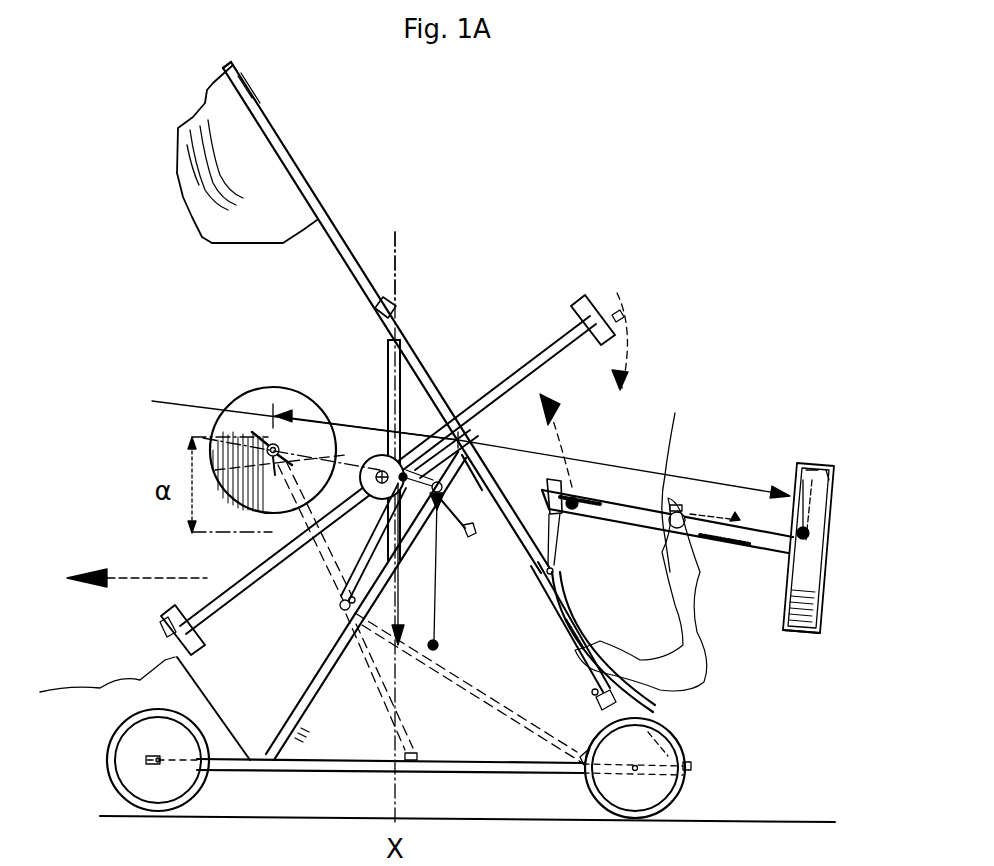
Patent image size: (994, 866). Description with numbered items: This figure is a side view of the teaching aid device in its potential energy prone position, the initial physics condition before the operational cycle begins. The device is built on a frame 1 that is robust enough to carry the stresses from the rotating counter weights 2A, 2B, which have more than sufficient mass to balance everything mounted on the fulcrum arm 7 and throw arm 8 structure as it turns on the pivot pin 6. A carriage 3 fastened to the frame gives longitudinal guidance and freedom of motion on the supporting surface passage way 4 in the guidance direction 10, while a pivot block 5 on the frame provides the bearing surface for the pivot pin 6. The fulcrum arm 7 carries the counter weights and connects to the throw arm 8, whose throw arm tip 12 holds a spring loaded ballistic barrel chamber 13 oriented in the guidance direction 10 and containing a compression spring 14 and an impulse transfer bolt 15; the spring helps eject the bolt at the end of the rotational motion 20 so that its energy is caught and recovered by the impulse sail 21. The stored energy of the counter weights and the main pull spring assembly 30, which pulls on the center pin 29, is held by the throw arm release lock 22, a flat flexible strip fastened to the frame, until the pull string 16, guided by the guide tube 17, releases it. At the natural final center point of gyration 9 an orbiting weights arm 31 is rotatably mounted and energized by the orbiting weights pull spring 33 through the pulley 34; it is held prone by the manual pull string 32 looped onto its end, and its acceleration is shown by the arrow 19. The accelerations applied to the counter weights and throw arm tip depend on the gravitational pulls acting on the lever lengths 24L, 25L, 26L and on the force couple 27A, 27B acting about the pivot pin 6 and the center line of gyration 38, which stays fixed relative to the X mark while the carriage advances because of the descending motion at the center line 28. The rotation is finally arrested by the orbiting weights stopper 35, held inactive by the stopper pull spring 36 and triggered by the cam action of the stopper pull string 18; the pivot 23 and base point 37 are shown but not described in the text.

The frame 1 is at (287, 727).
The counter weight 2A is at (268, 470).
The counter weight 2B is at (247, 387).
The carriage 3 is at (691, 769).
The supporting surface passage way 4 is at (110, 812).
The pivot block 5 is at (349, 607).
The pivot pin 6 is at (453, 490).
The fulcrum arm 7 is at (356, 499).
The throw arm 8 is at (712, 548).
The natural final center point of gyration 9 is at (379, 492).
The guidance direction 10 is at (127, 578).
The throw arm tip 12 is at (796, 552).
The ballistic barrel chamber 13 is at (802, 468).
The compression spring 14 is at (806, 630).
The impulse transfer bolt 15 is at (803, 508).
The pull string 16 is at (615, 670).
The guide tube 17 is at (564, 575).
The stopper pull string 18 is at (673, 600).
The arrow of orbiting weights arm acceleration 19 is at (625, 366).
The rotational motion of the fulcrum arm 20 is at (552, 400).
The impulse sail 21 is at (192, 222).
The throw arm release lock 22 is at (550, 477).
The pivot pin 23 is at (578, 510).
The lever length 24L is at (297, 410).
The lever length 25L is at (412, 437).
The lever length 26L is at (628, 470).
The force couple 27A is at (438, 590).
The force couple 27B is at (400, 640).
The center line 28 is at (827, 467).
The center pin 29 is at (318, 504).
The main pull spring assembly 30 is at (327, 587).
The orbiting weights arm 31 is at (594, 327).
The manual pull string 32 is at (153, 660).
The orbiting weights pull spring 33 is at (530, 627).
The pulley 34 is at (285, 413).
The orbiting weights stopper 35 is at (680, 476).
The stopper pull spring 36 is at (708, 510).
The base pivot 37 is at (413, 760).
The center line of gyration 38 is at (405, 236).